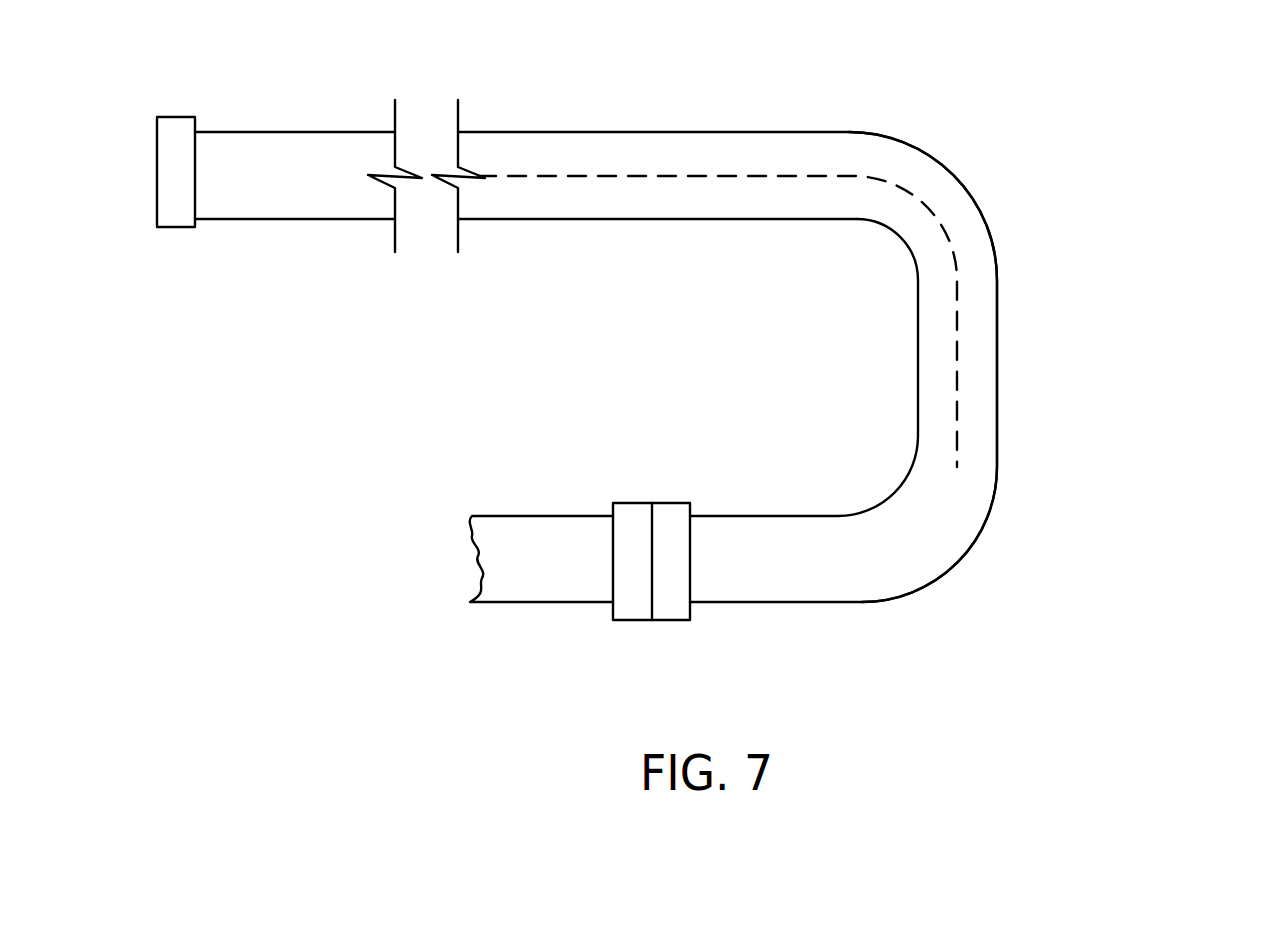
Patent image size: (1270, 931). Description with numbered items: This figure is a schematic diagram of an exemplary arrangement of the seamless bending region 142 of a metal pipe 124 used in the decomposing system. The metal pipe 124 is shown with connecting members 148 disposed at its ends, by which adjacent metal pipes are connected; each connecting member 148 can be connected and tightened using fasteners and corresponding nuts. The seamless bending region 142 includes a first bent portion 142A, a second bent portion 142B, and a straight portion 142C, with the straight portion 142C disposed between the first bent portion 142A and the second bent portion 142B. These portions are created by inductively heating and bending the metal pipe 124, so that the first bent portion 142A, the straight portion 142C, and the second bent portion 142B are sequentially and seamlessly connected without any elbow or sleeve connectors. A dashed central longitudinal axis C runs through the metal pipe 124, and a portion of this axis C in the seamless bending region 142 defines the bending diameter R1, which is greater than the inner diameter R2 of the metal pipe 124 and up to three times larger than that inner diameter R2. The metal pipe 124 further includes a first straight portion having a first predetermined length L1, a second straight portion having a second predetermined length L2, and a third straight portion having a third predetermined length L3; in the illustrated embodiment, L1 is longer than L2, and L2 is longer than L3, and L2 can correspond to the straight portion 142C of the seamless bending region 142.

The metal pipe 124 is at (542, 219).
The connecting member 148 is at (173, 228).
The seamless bending region 142 is at (1200, 313).
The first bent portion 142A is at (893, 105).
The second bent portion 142B is at (887, 627).
The straight portion 142C is at (1038, 263).
The central longitudinal axis C is at (718, 176).
The bending diameter R1 is at (845, 279).
The inner diameter R2 is at (938, 358).
The first predetermined length L1 is at (195, 238).
The second predetermined length L2 is at (872, 297).
The third predetermined length L3 is at (803, 468).